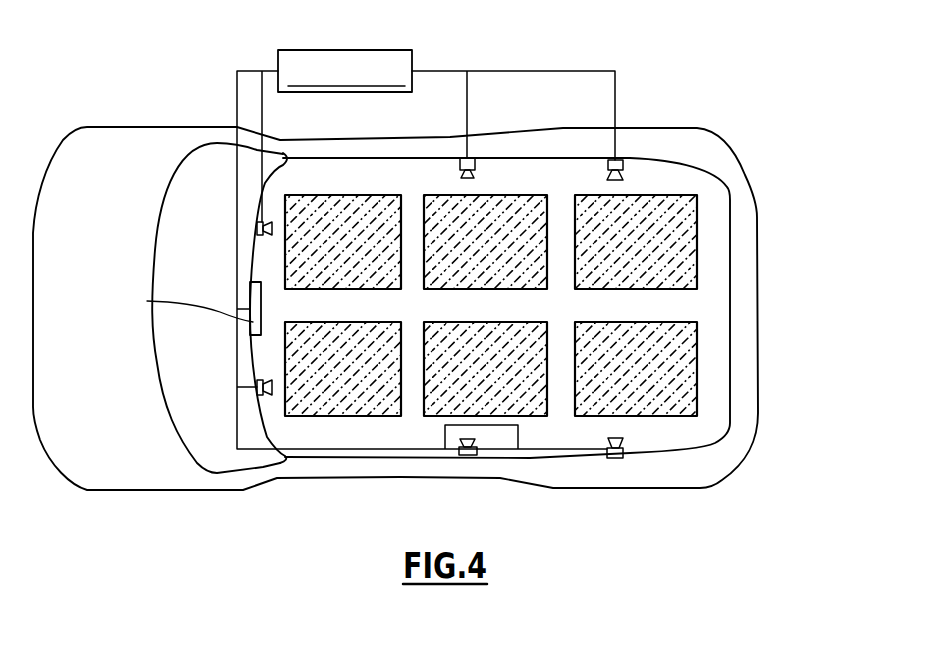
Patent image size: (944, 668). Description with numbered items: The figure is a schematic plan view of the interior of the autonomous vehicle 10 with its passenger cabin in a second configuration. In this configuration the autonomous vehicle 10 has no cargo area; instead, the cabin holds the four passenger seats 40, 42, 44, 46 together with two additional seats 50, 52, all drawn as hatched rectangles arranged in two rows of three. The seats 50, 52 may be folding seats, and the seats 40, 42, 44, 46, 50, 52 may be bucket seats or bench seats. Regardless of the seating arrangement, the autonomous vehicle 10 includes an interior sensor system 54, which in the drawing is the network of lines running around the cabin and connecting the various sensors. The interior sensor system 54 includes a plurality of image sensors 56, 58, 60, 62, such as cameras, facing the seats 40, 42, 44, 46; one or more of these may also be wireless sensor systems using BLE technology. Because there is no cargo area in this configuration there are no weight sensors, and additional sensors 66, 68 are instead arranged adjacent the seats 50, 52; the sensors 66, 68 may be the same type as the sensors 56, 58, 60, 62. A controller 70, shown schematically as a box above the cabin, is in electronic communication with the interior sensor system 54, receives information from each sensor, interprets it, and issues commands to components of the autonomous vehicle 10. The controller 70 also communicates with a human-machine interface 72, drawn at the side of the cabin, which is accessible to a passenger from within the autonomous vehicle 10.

The autonomous vehicle 10 is at (710, 93).
The passenger seat 40 is at (357, 256).
The passenger seat 42 is at (357, 383).
The passenger seat 44 is at (501, 256).
The passenger seat 46 is at (501, 383).
The additional seat 50 is at (651, 256).
The additional seat 52 is at (651, 383).
The interior sensor system 54 is at (222, 102).
The image sensor 56 is at (257, 229).
The image sensor 58 is at (257, 386).
The image sensor 60 is at (472, 158).
The image sensor 62 is at (467, 455).
The additional sensor 66 is at (618, 160).
The additional sensor 68 is at (616, 458).
The controller 70 is at (353, 50).
The human-machine interface 72 is at (261, 295).